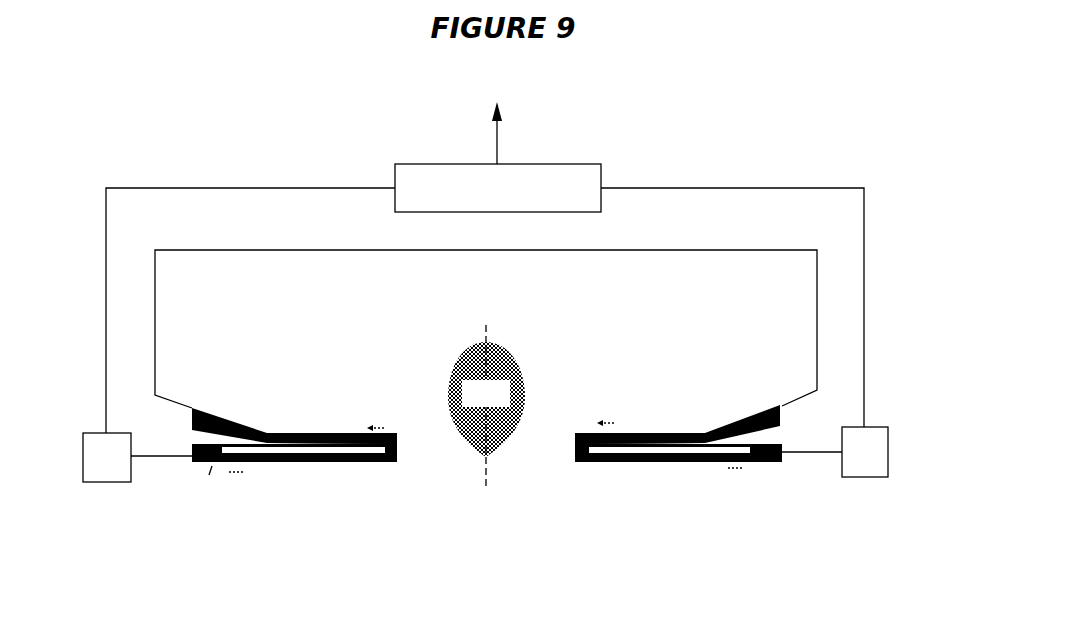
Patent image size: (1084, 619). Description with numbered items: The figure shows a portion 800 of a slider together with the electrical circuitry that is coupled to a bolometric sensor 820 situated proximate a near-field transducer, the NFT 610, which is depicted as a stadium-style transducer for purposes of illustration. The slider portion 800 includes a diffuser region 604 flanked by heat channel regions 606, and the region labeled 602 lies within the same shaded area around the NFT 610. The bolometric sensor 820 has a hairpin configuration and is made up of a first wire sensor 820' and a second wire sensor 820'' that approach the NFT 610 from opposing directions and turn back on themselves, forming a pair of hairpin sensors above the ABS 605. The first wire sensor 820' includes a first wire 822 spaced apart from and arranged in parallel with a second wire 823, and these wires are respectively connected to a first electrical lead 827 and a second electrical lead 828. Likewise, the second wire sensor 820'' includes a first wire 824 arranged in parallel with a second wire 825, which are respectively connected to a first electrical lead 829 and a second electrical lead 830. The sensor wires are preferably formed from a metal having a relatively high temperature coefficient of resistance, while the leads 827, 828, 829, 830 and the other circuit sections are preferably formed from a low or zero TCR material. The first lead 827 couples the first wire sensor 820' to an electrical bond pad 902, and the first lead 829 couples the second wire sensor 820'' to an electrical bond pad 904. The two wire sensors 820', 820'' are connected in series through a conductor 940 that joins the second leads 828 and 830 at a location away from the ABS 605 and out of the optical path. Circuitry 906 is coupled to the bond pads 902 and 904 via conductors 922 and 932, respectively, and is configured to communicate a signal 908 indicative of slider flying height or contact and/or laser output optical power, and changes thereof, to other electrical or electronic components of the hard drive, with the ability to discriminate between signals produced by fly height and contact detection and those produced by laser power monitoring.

The portion of the slider 800 is at (694, 160).
The circuitry 906 is at (550, 164).
The signal 908 is at (497, 147).
The conductor 922 is at (236, 188).
The conductor 932 is at (864, 218).
The electrical bond pad 902 is at (137, 457).
The electrical bond pad 904 is at (835, 452).
The conductor 940 is at (291, 250).
The fluid region 602 is at (627, 300).
The diffuser region 604 is at (486, 390).
The heat channel regions 606 is at (484, 303).
The NFT 610 is at (486, 399).
The ABS 605 is at (525, 502).
The bolometric sensor 820 is at (355, 533).
The first wire sensor 820' is at (304, 510).
The second wire sensor 820'' is at (640, 506).
The first wire 822 is at (270, 463).
The second wire 823 is at (331, 432).
The first wire 824 is at (697, 463).
The second wire 825 is at (640, 430).
The first electrical lead 827 is at (195, 465).
The second electrical lead 828 is at (219, 415).
The first electrical lead 829 is at (775, 463).
The second electrical lead 830 is at (748, 412).